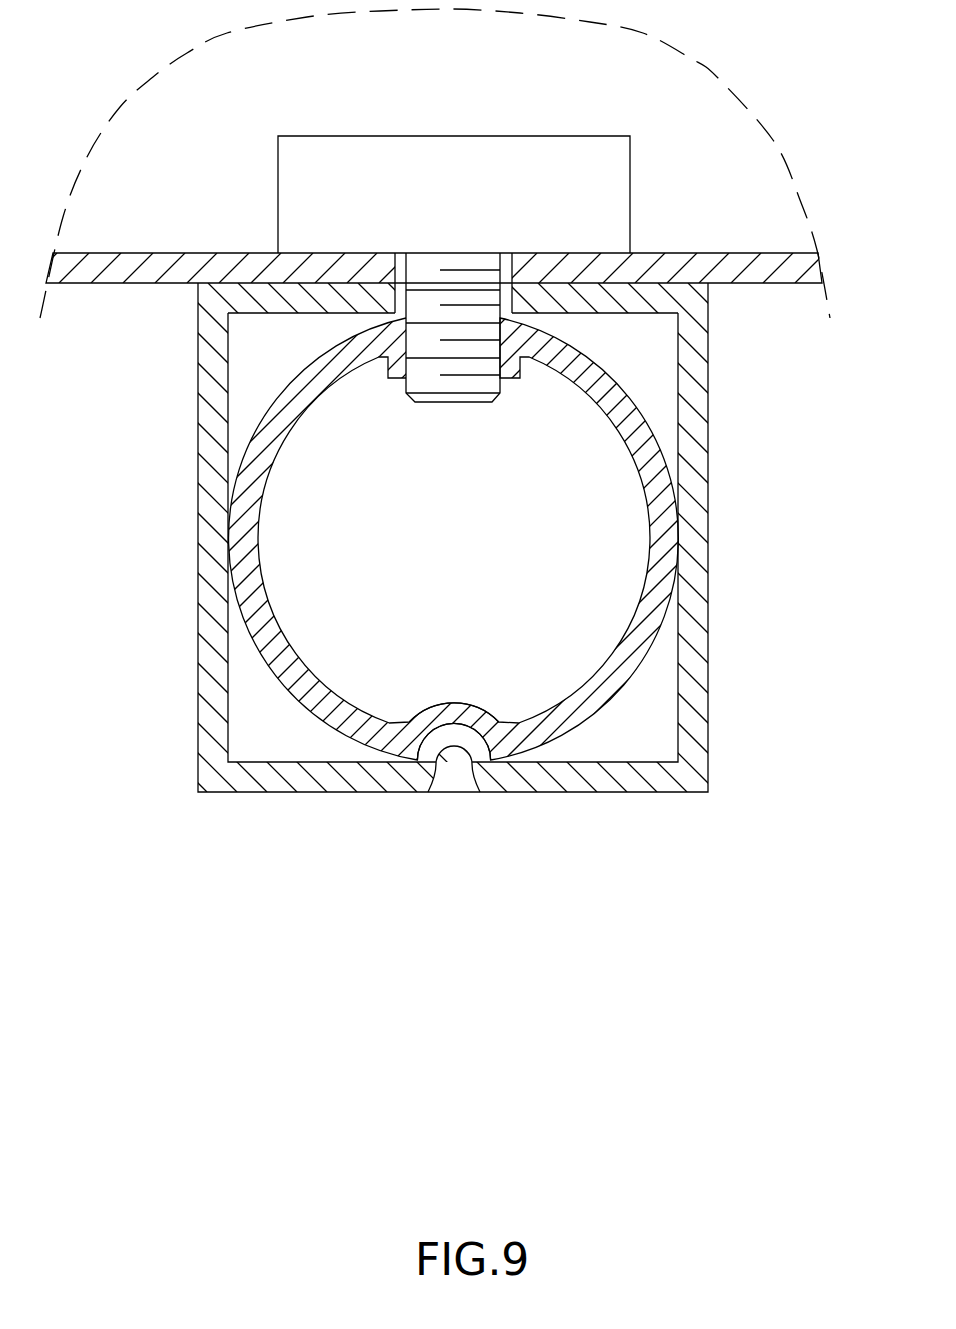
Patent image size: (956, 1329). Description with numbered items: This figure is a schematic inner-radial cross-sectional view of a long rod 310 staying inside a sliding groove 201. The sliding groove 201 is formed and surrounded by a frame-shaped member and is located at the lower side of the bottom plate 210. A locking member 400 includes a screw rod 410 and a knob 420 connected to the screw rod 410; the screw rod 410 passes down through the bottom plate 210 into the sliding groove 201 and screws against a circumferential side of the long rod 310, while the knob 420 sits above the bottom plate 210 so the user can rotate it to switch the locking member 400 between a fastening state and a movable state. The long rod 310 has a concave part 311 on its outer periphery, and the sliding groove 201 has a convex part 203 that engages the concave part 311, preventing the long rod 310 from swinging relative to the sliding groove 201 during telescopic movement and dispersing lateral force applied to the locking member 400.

The sliding groove 201 is at (290, 738).
The convex part 203 is at (479, 722).
The bottom plate 210 is at (770, 292).
The long rod 310 is at (655, 625).
The concave part 311 is at (437, 737).
The locking member 400 is at (460, 257).
The screw rod 410 is at (420, 383).
The knob 420 is at (285, 188).